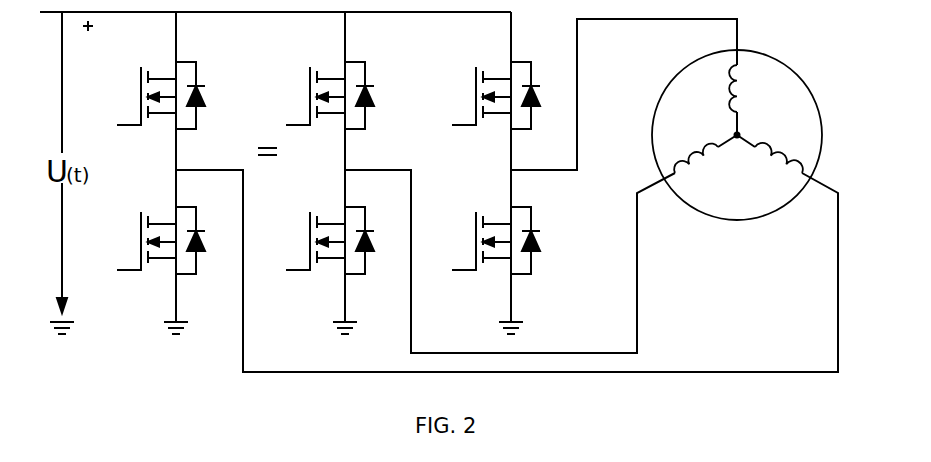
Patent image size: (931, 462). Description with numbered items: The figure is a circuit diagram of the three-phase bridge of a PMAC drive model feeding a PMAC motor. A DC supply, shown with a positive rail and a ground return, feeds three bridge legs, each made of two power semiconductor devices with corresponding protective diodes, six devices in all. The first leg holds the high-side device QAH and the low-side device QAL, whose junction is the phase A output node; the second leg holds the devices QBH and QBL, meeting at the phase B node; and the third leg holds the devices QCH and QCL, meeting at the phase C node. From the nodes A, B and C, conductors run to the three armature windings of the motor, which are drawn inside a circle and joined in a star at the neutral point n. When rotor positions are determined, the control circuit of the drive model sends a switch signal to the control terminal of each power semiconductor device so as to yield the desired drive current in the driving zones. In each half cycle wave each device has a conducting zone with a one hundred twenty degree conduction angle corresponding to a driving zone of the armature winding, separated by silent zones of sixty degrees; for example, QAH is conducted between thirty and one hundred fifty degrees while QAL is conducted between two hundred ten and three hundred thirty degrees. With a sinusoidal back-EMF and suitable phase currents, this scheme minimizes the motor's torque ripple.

The phase A high-side power semiconductor device QAH is at (145, 95).
The phase A low-side power semiconductor device QAL is at (145, 240).
The phase B high-side power semiconductor device QBH is at (313, 95).
The phase B low-side power semiconductor device QBL is at (313, 240).
The phase C high-side power semiconductor device QCH is at (478, 95).
The phase C low-side power semiconductor device QCL is at (478, 240).
The phase A is at (496, 263).
The phase B is at (498, 254).
The phase C is at (612, 102).
The neutral point n is at (735, 129).